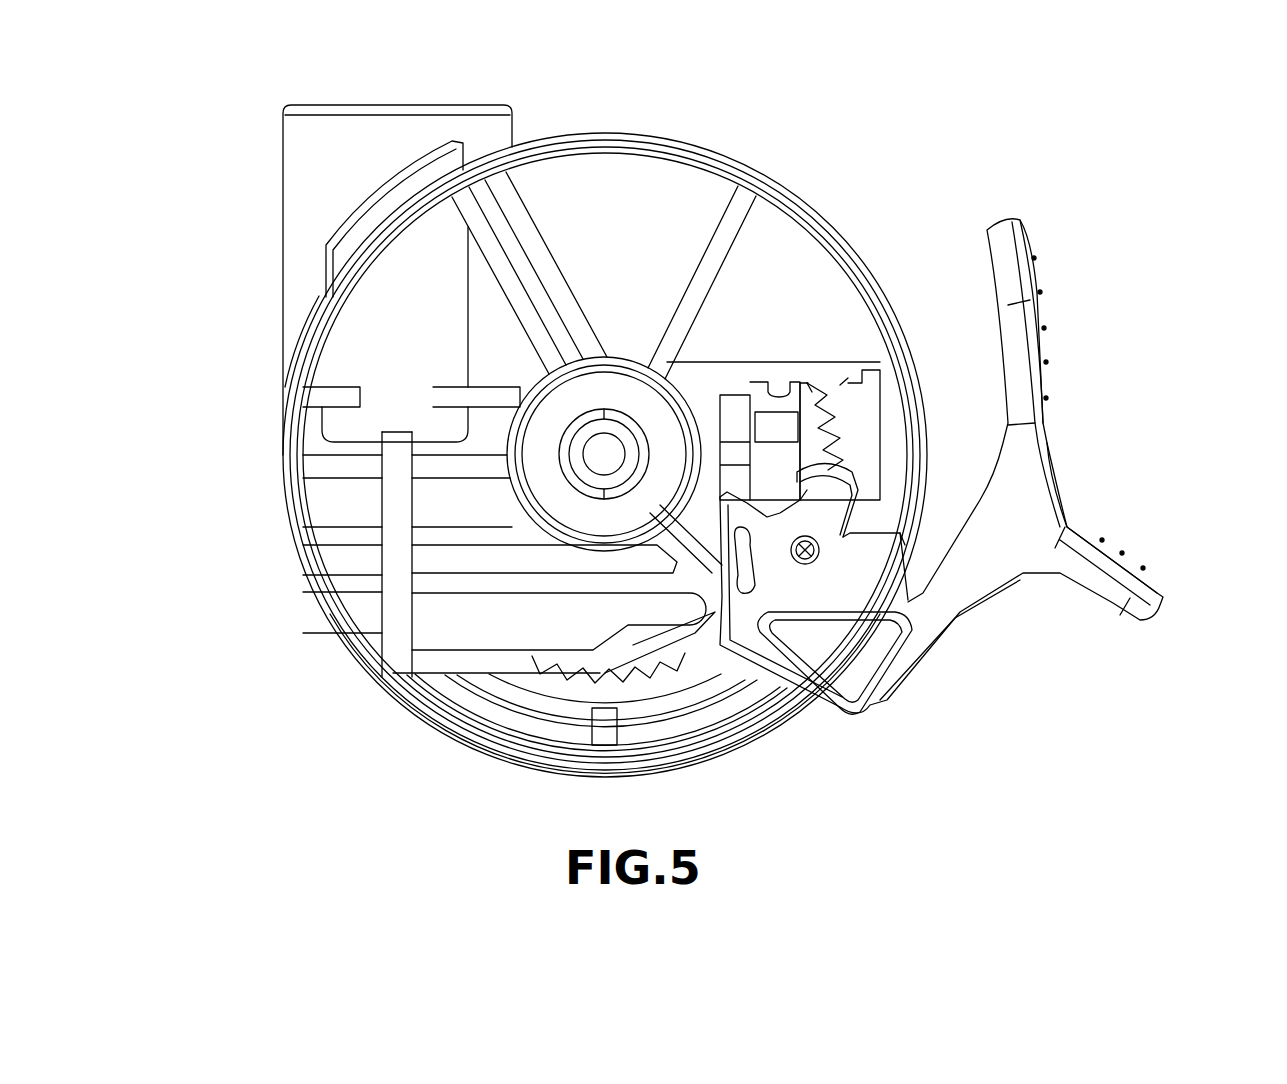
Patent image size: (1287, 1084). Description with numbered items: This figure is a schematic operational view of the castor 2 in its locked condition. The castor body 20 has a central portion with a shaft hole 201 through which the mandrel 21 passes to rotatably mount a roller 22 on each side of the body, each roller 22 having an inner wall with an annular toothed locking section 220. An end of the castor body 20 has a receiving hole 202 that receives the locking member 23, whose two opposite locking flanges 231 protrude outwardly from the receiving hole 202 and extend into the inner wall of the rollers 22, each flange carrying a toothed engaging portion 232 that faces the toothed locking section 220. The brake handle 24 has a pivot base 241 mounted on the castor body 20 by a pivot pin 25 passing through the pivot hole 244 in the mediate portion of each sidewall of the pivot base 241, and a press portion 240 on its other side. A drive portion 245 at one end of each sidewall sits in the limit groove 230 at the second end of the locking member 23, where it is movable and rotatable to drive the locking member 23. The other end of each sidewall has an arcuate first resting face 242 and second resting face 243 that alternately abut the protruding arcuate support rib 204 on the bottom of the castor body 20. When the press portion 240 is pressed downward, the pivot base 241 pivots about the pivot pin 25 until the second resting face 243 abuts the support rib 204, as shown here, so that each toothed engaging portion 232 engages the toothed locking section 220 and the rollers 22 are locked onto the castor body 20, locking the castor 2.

The castor 2 is at (278, 637).
The castor body 20 is at (702, 185).
The mandrel 21 is at (610, 437).
The roller 22 is at (637, 532).
The locking member 23 is at (851, 323).
The brake handle 24 is at (993, 493).
The pivot pin 25 is at (905, 650).
The shaft hole 201 is at (560, 456).
The receiving hole 202 is at (862, 372).
The support rib 204 is at (716, 640).
The toothed locking section 220 is at (828, 375).
The limit groove 230 is at (790, 617).
The locking flange 231 is at (809, 382).
The toothed engaging portion 232 is at (852, 376).
The press portion 240 is at (1045, 343).
The pivot base 241 is at (930, 635).
The first resting face 242 is at (712, 535).
The second resting face 243 is at (718, 600).
The pivot hole 244 is at (815, 565).
The drive portion 245 is at (855, 485).